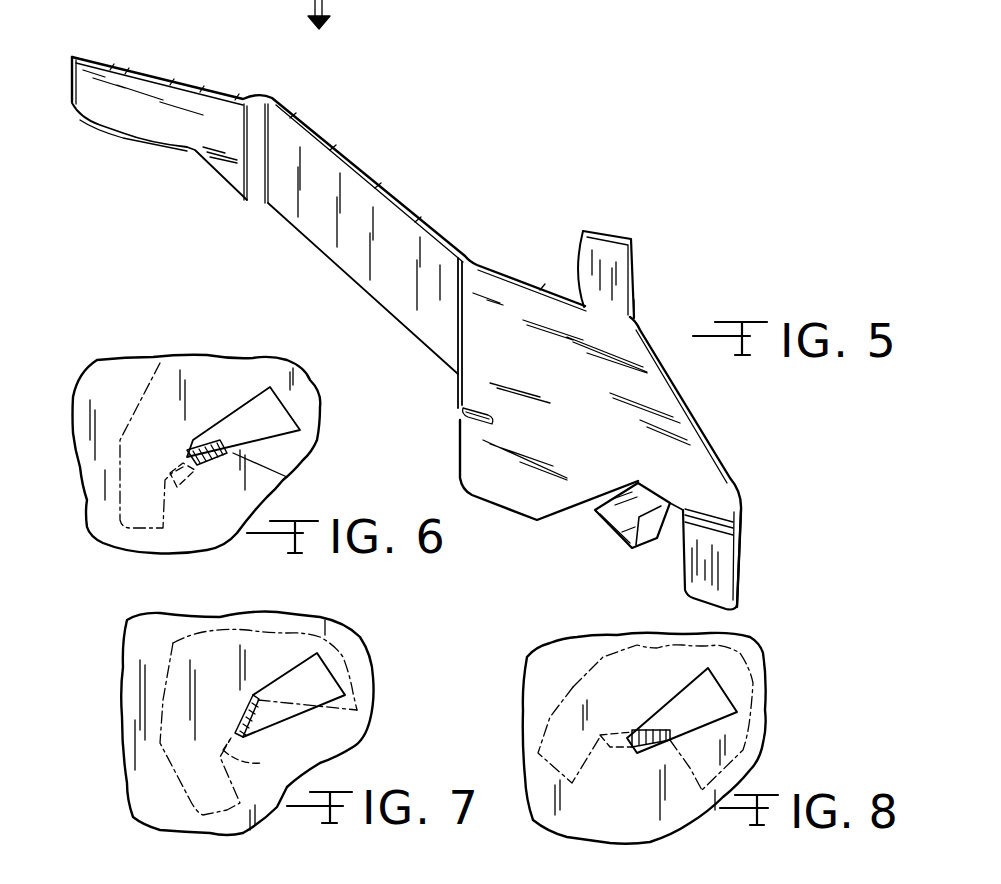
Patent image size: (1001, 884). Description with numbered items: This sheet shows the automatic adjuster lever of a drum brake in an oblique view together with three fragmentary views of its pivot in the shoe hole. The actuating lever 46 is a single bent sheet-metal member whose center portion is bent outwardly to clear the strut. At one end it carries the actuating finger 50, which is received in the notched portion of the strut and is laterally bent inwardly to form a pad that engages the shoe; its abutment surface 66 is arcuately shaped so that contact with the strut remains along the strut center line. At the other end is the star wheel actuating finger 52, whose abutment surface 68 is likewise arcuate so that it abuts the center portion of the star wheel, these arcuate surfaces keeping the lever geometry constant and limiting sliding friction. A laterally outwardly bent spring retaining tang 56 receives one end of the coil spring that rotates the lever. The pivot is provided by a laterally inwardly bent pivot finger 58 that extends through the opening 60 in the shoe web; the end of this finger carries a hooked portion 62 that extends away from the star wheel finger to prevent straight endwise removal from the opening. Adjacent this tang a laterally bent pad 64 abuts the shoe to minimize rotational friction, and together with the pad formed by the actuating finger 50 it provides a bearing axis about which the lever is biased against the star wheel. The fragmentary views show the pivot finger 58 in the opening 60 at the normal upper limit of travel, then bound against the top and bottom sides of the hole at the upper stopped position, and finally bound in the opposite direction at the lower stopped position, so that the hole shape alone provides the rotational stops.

In FIG. 5, the actuating lever 46 is at (420, 211).
In FIG. 5, the actuating finger 50 is at (634, 279).
In FIG. 5, the star wheel actuating finger 52 is at (171, 32).
In FIG. 5, the spring retaining tang 56 is at (288, 0).
In FIG. 5, the pivot finger 58 is at (610, 530).
In FIG. 6, the pivot finger 58 is at (215, 466).
In FIG. 7, the pivot finger 58 is at (262, 717).
In FIG. 8, the pivot finger 58 is at (652, 728).
In FIG. 6, the opening 60 is at (287, 407).
In FIG. 7, the opening 60 is at (333, 673).
In FIG. 8, the opening 60 is at (743, 680).
In FIG. 5, the bent lip 62 is at (651, 550).
In FIG. 6, the bent lip 62 is at (177, 470).
In FIG. 7, the bent lip 62 is at (230, 752).
In FIG. 8, the bent lip 62 is at (608, 748).
In FIG. 5, the laterally bent pad 64 is at (740, 570).
In FIG. 6, the laterally bent pad 64 is at (120, 503).
In FIG. 7, the laterally bent pad 64 is at (187, 801).
In FIG. 8, the laterally bent pad 64 is at (547, 737).
In FIG. 5, the abutment surface 66 is at (573, 258).
In FIG. 5, the abutment surface 68 is at (108, 130).